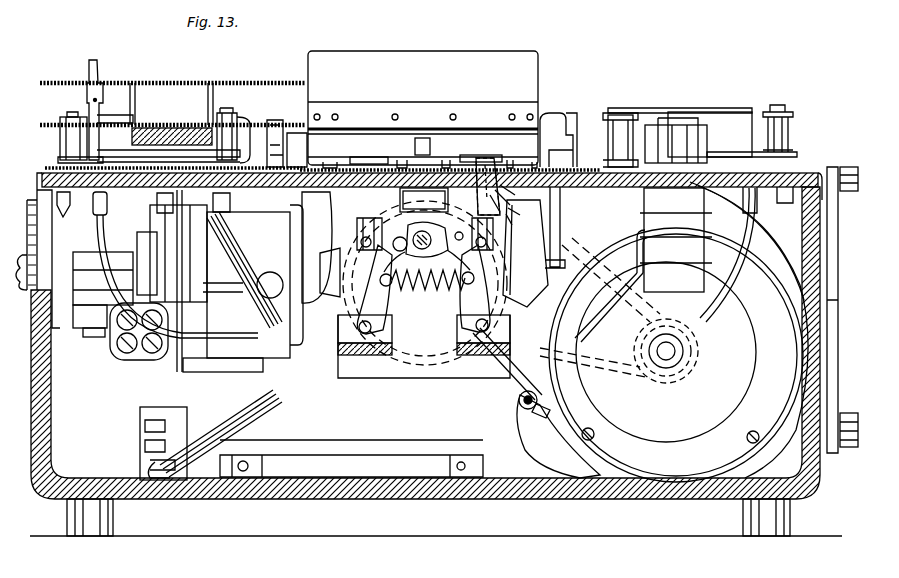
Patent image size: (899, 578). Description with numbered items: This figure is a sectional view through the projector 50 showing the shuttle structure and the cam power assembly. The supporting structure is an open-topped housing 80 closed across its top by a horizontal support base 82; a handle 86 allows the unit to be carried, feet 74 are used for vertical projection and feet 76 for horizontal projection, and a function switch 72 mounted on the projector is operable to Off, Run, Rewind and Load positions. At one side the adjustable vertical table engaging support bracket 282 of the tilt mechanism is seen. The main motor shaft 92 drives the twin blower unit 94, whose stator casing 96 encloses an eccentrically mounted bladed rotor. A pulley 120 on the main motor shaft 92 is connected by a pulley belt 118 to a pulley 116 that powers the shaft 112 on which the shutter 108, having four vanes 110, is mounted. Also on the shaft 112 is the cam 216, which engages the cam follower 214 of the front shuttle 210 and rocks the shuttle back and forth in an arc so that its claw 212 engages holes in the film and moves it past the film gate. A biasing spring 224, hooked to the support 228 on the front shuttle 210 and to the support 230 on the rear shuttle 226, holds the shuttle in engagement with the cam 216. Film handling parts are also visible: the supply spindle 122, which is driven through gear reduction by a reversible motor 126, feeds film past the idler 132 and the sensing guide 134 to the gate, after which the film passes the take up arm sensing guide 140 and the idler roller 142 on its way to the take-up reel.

The projector 50 is at (638, 83).
The function switch 72 is at (698, 128).
The feet 74 is at (846, 167).
The feet 76 is at (90, 532).
The housing 80 is at (808, 487).
The horizontal support base 82 is at (584, 166).
The handle 86 is at (50, 323).
The shaft 92 is at (675, 350).
The twin blower unit 94 is at (805, 262).
The stator casing 96 is at (781, 246).
The shutter 108 is at (395, 384).
The vanes 110 is at (472, 115).
The shaft 112 is at (425, 236).
The pulley 116 is at (435, 328).
The pulley belt 118 is at (611, 372).
The pulley 120 is at (640, 344).
The supply spindle 122 is at (90, 61).
The reversible motor 126 is at (272, 356).
The idler 132 is at (234, 148).
The sensing guide 134 is at (62, 142).
The take up arm sensing guide 140 is at (792, 125).
The idler roller 142 is at (633, 135).
The front shuttle 210 is at (501, 287).
The claw 212 is at (362, 158).
The cam follower 214 is at (417, 239).
The cam 216 is at (398, 257).
The biasing spring 224 is at (430, 294).
The rear shuttle 226 is at (353, 319).
The support 228 is at (470, 258).
The support 230 is at (350, 280).
The vertical table engaging support bracket 282 is at (830, 283).